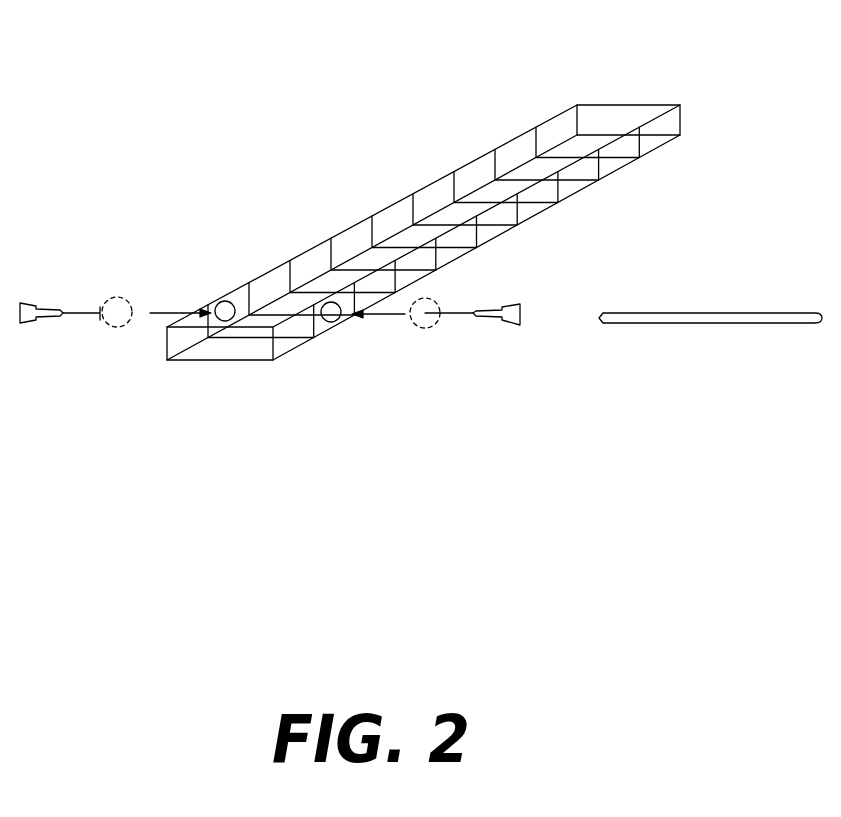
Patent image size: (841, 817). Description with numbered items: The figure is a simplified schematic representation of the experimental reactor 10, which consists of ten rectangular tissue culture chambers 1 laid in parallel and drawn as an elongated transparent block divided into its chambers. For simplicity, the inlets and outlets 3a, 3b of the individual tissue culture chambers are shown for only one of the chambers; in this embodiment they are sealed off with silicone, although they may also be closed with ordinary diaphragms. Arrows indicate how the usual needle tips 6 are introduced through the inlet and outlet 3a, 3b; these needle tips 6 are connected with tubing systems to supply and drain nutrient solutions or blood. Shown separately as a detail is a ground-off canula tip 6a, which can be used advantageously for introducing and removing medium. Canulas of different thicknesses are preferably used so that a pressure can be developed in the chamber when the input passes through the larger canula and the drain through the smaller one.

The experimental reactor 10 is at (441, 114).
The tissue culture chamber 1 is at (312, 268).
The inlet 3a is at (335, 322).
The outlet 3b is at (225, 300).
The needle tip 6 is at (117, 327).
The ground-off canula tip 6a is at (680, 313).